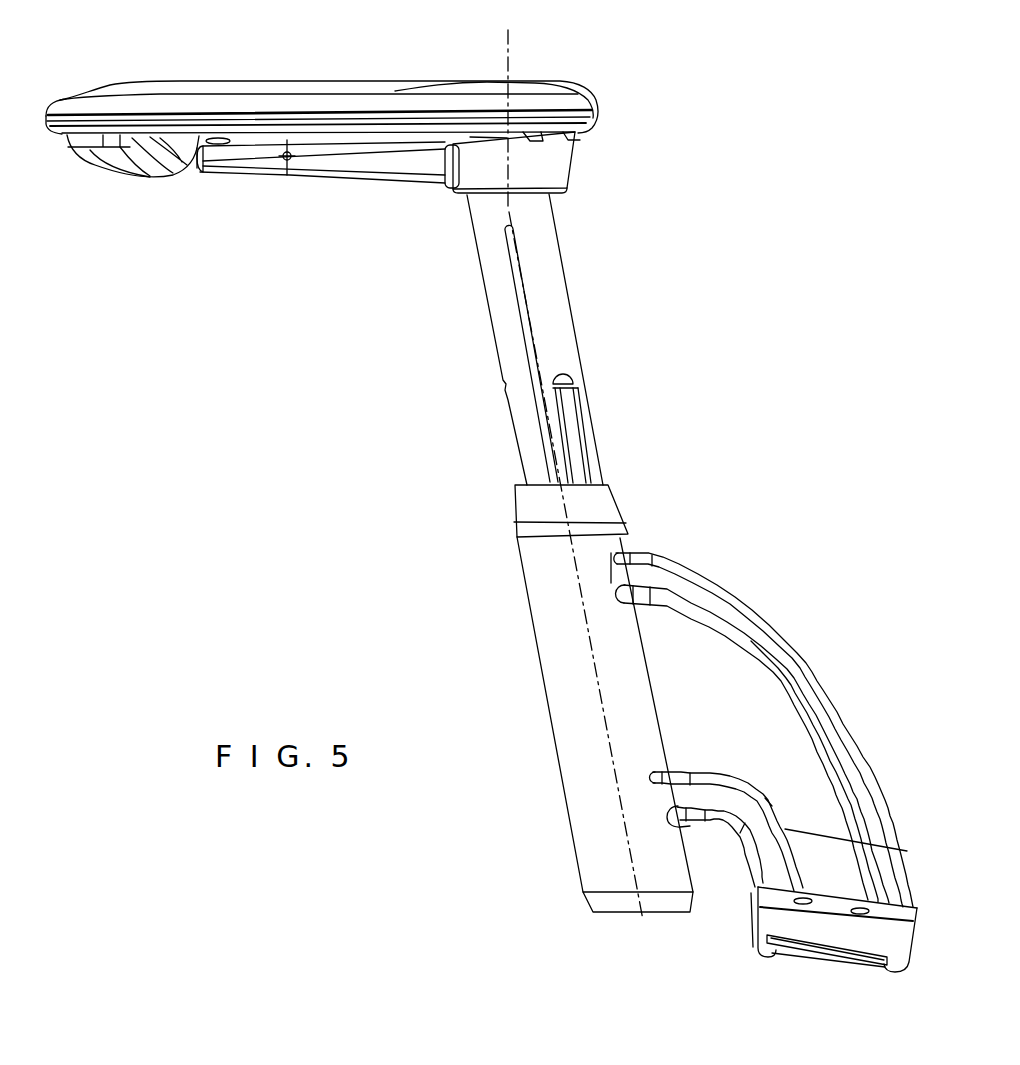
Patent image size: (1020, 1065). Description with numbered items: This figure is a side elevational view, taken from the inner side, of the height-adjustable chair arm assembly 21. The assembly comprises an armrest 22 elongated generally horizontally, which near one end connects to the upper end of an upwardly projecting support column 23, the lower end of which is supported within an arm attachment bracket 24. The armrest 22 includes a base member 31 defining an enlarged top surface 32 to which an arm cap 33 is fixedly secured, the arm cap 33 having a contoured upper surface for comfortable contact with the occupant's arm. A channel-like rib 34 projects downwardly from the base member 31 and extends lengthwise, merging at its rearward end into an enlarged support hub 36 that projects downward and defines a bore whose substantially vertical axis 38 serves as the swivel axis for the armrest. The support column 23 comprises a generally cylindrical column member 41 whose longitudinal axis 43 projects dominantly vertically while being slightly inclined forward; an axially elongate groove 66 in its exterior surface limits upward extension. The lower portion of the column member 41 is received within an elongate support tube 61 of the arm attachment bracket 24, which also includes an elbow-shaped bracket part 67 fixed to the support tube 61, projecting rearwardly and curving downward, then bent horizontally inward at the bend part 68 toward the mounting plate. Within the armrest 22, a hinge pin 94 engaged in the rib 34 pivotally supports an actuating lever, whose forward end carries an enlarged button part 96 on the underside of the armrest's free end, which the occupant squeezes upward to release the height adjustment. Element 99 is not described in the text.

The height-adjustable chair arm assembly 21 is at (307, 337).
The armrest 22 is at (314, 177).
The support column 23 is at (572, 300).
The arm attachment bracket 24 is at (741, 602).
The base member 31 is at (345, 169).
The top surface 32 is at (117, 148).
The arm cap 33 is at (226, 84).
The channel-like rib 34 is at (413, 165).
The support hub 36 is at (558, 173).
The axis 38 is at (508, 46).
The column member 41 is at (548, 238).
The longitudinal axis 43 is at (620, 828).
The support tube 61 is at (553, 663).
The groove 66 is at (511, 283).
The bracket part 67 is at (750, 700).
The bend part 68 is at (828, 932).
The hinge pin 94 is at (287, 160).
The button part 96 is at (143, 168).
The collar 99 is at (605, 505).